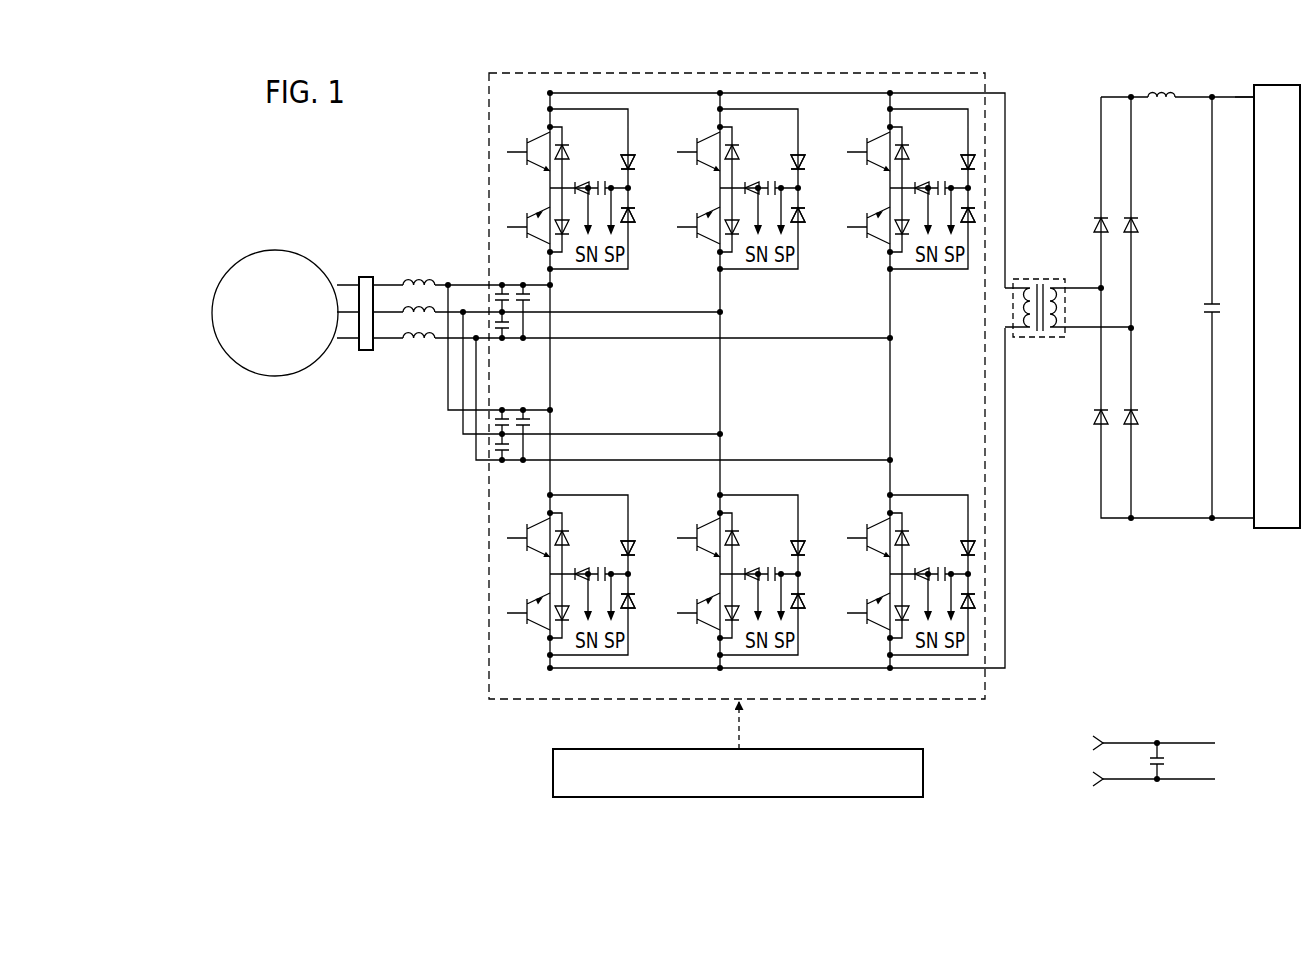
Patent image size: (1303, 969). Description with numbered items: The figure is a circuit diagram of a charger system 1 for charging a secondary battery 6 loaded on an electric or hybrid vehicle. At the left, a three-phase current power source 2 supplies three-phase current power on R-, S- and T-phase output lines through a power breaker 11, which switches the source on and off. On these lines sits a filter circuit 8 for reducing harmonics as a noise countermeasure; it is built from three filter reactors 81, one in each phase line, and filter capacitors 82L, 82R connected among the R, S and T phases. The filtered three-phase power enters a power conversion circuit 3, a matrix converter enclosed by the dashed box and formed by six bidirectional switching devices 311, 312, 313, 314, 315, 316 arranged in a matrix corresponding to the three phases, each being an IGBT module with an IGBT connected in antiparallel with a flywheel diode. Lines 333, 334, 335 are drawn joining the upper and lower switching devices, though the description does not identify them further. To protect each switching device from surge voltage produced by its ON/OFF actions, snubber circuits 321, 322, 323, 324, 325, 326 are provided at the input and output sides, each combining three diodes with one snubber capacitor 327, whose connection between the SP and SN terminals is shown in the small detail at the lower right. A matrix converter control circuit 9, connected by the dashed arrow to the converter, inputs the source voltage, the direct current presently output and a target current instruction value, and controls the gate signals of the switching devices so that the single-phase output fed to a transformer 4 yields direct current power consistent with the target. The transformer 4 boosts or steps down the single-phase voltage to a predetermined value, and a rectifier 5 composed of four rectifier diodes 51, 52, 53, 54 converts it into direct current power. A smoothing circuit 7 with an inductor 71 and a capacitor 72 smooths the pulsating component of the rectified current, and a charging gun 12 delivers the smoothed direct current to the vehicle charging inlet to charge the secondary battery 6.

The charger system 1 is at (450, 113).
The three-phase current power source 2 is at (275, 250).
The power conversion circuit 3 is at (487, 665).
The transformer 4 is at (1040, 279).
The rectifier 5 is at (1118, 535).
The secondary battery 6 is at (1278, 85).
The smoothing circuit 7 is at (1194, 535).
The filter circuit 8 is at (435, 393).
The matrix converter control circuit 9 is at (553, 774).
The power breaker 11 is at (366, 277).
The charging gun 12 is at (1232, 97).
The rectifier diode 51 is at (1097, 214).
The rectifier diode 52 is at (1097, 407).
The rectifier diode 53 is at (1134, 214).
The rectifier diode 54 is at (1134, 407).
The inductor 71 is at (1162, 101).
The capacitor 72 is at (1206, 304).
The filter reactor 81 is at (420, 270).
The filter capacitor 82L is at (505, 272).
The filter capacitor 82R is at (505, 476).
The bidirectional switching device 311 is at (540, 125).
The bidirectional switching device 312 is at (541, 512).
The bidirectional switching device 313 is at (712, 126).
The bidirectional switching device 314 is at (711, 512).
The bidirectional switching device 315 is at (882, 126).
The bidirectional switching device 316 is at (881, 512).
The snubber circuit 321 is at (648, 214).
The snubber circuit 322 is at (648, 600).
The snubber circuit 323 is at (818, 214).
The snubber circuit 324 is at (818, 600).
The snubber circuit 325 is at (979, 189).
The snubber circuit 326 is at (979, 576).
The snubber capacitor 327 is at (1168, 761).
The R-phase connection line 333 is at (552, 372).
The S-phase connection line 334 is at (722, 372).
The T-phase connection line 335 is at (892, 372).